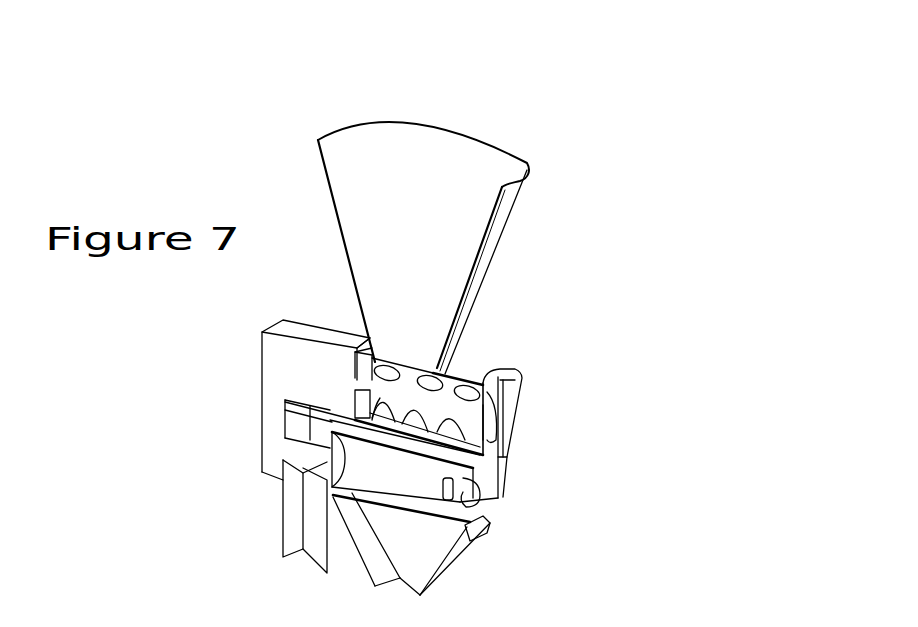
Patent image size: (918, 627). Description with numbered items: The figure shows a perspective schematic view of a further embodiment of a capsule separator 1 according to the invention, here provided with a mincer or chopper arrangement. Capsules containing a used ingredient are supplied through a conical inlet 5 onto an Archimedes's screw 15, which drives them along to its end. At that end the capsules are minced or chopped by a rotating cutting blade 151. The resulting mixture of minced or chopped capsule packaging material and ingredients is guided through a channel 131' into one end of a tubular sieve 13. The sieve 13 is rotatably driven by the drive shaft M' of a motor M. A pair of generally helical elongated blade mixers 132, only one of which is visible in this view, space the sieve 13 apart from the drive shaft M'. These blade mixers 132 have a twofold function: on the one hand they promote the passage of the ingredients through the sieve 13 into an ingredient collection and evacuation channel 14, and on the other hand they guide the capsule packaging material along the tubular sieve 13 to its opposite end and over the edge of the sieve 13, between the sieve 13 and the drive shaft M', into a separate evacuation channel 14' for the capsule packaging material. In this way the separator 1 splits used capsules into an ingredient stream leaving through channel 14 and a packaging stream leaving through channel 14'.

The dosing device 1 is at (262, 105).
The conical inlet 5 is at (410, 196).
The Archimedes's screw 15 is at (453, 372).
The channel 131' is at (538, 413).
The rotating cutting blade 151 is at (497, 409).
The helical elongated blade mixer 132 is at (368, 483).
The tubular sieve 13 is at (460, 502).
The evacuation channel for capsule packaging material 14' is at (445, 539).
The ingredient collection and evacuation channel 14 is at (452, 545).
The motor M is at (281, 446).
The drive shaft M' is at (336, 428).